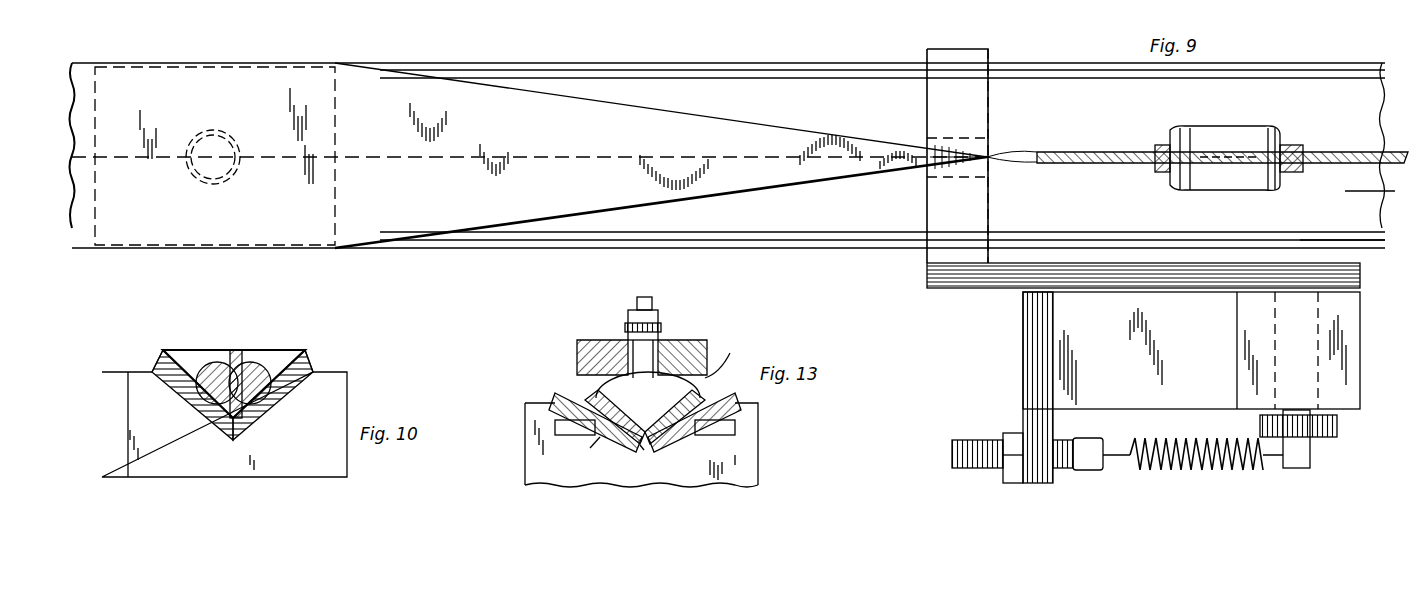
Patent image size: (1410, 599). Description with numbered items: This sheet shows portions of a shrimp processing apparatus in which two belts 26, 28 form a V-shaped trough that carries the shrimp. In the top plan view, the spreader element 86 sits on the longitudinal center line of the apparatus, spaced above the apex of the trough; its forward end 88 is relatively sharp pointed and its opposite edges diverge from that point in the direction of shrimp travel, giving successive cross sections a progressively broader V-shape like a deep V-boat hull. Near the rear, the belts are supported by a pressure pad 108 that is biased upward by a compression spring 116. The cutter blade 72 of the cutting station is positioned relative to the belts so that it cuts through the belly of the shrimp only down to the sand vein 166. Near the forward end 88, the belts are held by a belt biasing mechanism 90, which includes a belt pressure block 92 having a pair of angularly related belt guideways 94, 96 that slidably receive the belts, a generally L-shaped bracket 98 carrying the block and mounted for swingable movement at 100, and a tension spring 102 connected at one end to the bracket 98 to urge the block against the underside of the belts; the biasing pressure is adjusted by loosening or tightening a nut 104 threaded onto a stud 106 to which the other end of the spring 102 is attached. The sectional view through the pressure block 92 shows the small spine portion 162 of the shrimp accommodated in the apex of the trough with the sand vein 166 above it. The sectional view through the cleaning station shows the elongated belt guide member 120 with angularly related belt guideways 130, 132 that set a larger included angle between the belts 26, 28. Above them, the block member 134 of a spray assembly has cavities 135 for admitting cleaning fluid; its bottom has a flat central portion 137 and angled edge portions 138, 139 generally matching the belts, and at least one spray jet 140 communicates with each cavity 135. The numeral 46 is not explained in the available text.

In FIG. 9, the belt 26 is at (1377, 192).
In FIG. 10, the belt 26 is at (165, 370).
In FIG. 13, the belt 26 is at (760, 412).
In FIG. 9, the belt 28 is at (1358, 96).
In FIG. 10, the belt 28 is at (312, 372).
In FIG. 13, the belt 28 is at (553, 405).
In FIG. 9, the rail flange 46 is at (1380, 242).
In FIG. 9, the cutter blade 72 is at (1325, 152).
In FIG. 9, the spreader element 86 is at (720, 125).
In FIG. 10, the spreader element 86 is at (300, 355).
In FIG. 9, the forward end 88 is at (990, 158).
In FIG. 9, the belt biasing mechanism 90 is at (1002, 341).
In FIG. 9, the belt pressure block 92 is at (925, 192).
In FIG. 10, the belt pressure block 92 is at (348, 386).
In FIG. 10, the belt guideway 94 is at (195, 397).
In FIG. 10, the belt guideway 96 is at (275, 400).
In FIG. 9, the L-shaped bracket 98 is at (1000, 275).
In FIG. 10, the L-shaped bracket 98 is at (113, 383).
In FIG. 9, the swingable mounting 100 is at (1320, 346).
In FIG. 9, the tension spring 102 is at (1222, 445).
In FIG. 9, the nut 104 is at (1013, 433).
In FIG. 9, the stud 106 is at (980, 468).
In FIG. 9, the pressure pad 108 is at (335, 100).
In FIG. 9, the compression spring 116 is at (220, 130).
In FIG. 13, the belt guide member 120 is at (713, 457).
In FIG. 13, the belt guideway 130 is at (740, 437).
In FIG. 13, the belt guideway 132 is at (598, 440).
In FIG. 13, the block member 134 is at (577, 345).
In FIG. 13, the cavity 135 is at (668, 350).
In FIG. 13, the flat central portion 137 is at (638, 442).
In FIG. 13, the angled edge portion 138 is at (730, 378).
In FIG. 13, the angled edge portion 139 is at (590, 394).
In FIG. 13, the spray jet 140 is at (598, 385).
In FIG. 10, the spine portion 162 is at (238, 428).
In FIG. 10, the sand vein 166 is at (215, 422).